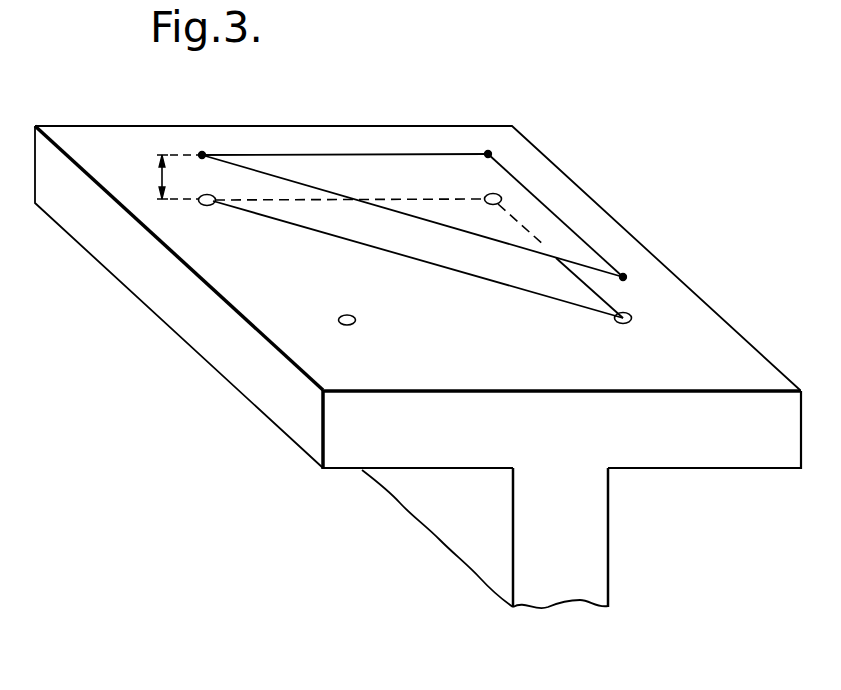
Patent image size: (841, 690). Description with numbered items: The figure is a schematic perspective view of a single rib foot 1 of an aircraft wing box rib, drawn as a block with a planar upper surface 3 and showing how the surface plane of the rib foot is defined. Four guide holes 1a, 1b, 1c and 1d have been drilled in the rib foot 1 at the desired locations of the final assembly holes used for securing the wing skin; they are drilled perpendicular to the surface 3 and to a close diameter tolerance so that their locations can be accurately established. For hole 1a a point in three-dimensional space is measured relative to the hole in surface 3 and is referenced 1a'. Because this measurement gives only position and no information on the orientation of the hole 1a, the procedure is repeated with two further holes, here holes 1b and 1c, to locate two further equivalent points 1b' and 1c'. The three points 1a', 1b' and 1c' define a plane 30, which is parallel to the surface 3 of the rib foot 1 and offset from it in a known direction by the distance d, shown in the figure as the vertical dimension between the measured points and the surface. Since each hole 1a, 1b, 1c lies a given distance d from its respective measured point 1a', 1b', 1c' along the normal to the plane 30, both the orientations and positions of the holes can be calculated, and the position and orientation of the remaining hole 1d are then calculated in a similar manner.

The rib foot 1 is at (93, 230).
The plane 30 is at (339, 166).
The upper surface 3 is at (393, 236).
The guide hole 1a is at (217, 231).
The guide hole 1b is at (419, 233).
The guide hole 1c is at (361, 345).
The guide hole 1d is at (617, 322).
The measured point 1a' is at (193, 120).
The measured point 1b' is at (530, 179).
The measured point 1c' is at (668, 257).
The distance d is at (168, 177).